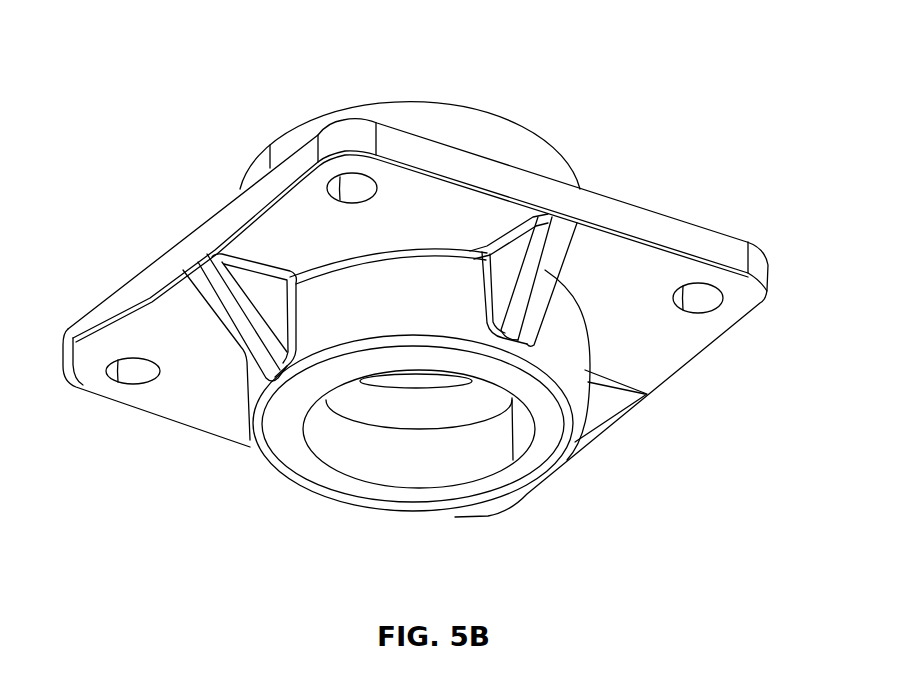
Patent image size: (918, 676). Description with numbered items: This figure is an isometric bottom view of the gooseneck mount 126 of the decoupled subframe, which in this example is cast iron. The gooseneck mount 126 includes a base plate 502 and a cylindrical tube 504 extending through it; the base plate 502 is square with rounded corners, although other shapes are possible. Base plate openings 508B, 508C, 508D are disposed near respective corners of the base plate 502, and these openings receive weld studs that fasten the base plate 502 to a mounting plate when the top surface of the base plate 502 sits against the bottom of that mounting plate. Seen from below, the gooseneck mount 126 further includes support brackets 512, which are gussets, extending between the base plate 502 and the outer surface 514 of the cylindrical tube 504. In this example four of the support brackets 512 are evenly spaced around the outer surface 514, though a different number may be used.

The gooseneck mount 126 is at (146, 50).
The base plate 502 is at (627, 197).
The cylindrical tube 504 is at (481, 109).
The base plate opening 508B is at (123, 357).
The base plate opening 508C is at (710, 287).
The base plate opening 508D is at (342, 176).
The support bracket 512 is at (227, 330).
The outer surface 514 is at (567, 337).